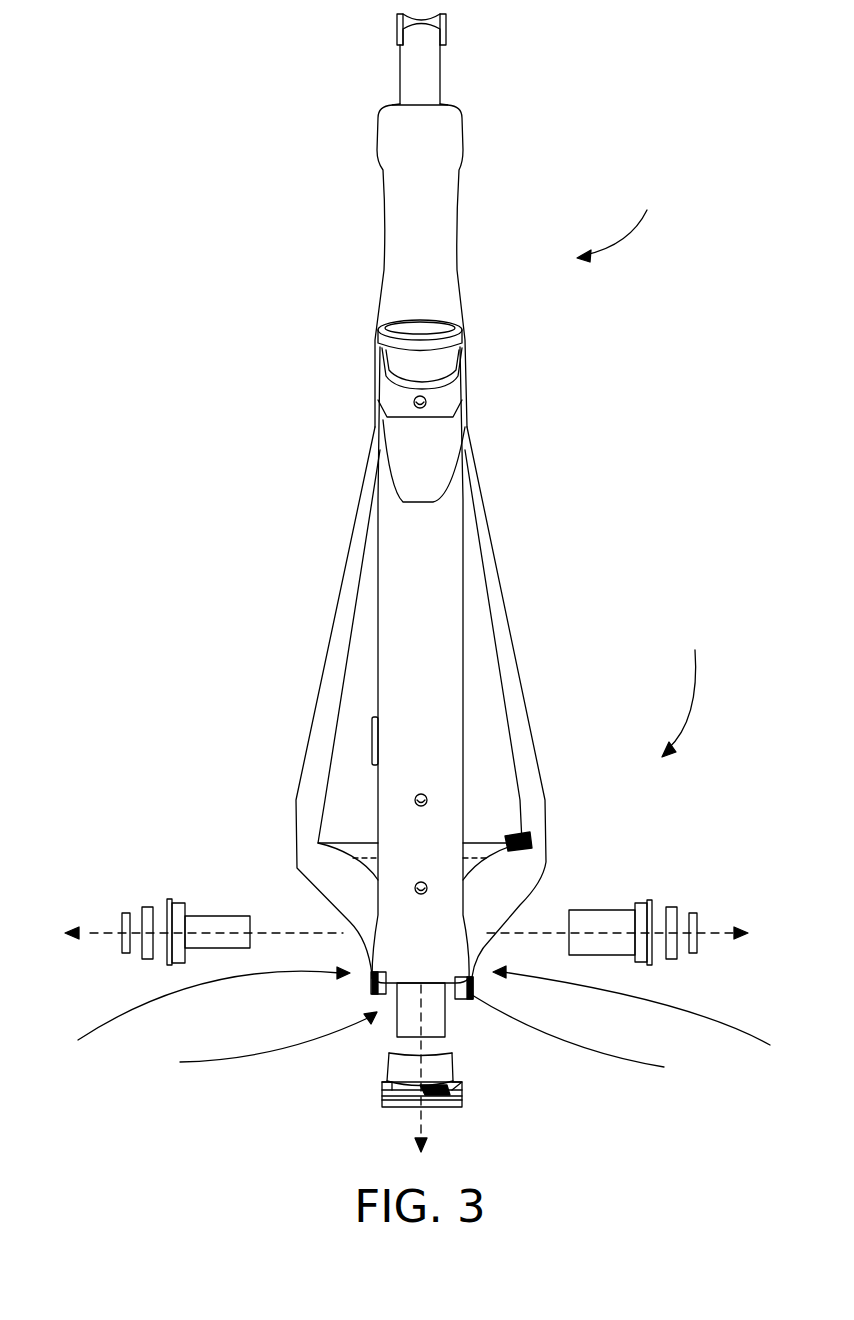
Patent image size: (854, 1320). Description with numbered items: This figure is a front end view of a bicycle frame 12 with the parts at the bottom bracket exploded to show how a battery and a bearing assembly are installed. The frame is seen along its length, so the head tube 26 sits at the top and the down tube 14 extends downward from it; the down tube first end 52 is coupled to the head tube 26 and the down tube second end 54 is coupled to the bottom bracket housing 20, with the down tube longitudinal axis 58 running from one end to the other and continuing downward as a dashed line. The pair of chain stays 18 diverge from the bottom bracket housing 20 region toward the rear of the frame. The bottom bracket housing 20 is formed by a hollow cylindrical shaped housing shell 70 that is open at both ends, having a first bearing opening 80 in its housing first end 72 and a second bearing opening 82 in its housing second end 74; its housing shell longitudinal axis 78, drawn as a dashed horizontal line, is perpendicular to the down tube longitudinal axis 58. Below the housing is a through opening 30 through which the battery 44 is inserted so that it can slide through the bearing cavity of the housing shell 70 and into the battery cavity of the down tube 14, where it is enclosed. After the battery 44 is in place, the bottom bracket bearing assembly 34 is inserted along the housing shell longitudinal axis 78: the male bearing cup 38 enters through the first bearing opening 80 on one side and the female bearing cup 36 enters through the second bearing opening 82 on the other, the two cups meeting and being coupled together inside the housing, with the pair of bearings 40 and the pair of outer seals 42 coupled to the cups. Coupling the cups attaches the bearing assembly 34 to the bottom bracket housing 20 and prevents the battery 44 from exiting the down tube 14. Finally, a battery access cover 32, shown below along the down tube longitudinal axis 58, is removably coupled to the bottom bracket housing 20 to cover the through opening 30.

The bicycle frame 12 is at (624, 222).
The down tube 14 is at (422, 645).
The chain stays 18 is at (328, 707).
The bottom bracket housing 20 is at (345, 985).
The head tube 26 is at (433, 200).
The through opening 30 is at (365, 1010).
The battery access cover 32 is at (432, 1103).
The bottom bracket bearing assembly 34 is at (684, 689).
The female bearing cup 36 is at (607, 922).
The male bearing cup 38 is at (209, 933).
The bearings 40 is at (148, 907).
The outer seals 42 is at (128, 913).
The battery 44 is at (435, 1010).
The down tube first end 52 is at (460, 498).
The down tube second end 54 is at (410, 952).
The down tube longitudinal axis 58 is at (420, 1118).
The hollow cylindrical shaped housing shell 70 is at (582, 1038).
The housing first end 72 is at (263, 1043).
The housing second end 74 is at (473, 982).
The housing shell longitudinal axis 78 is at (101, 933).
The first bearing opening 80 is at (196, 1014).
The second bearing opening 82 is at (646, 1015).